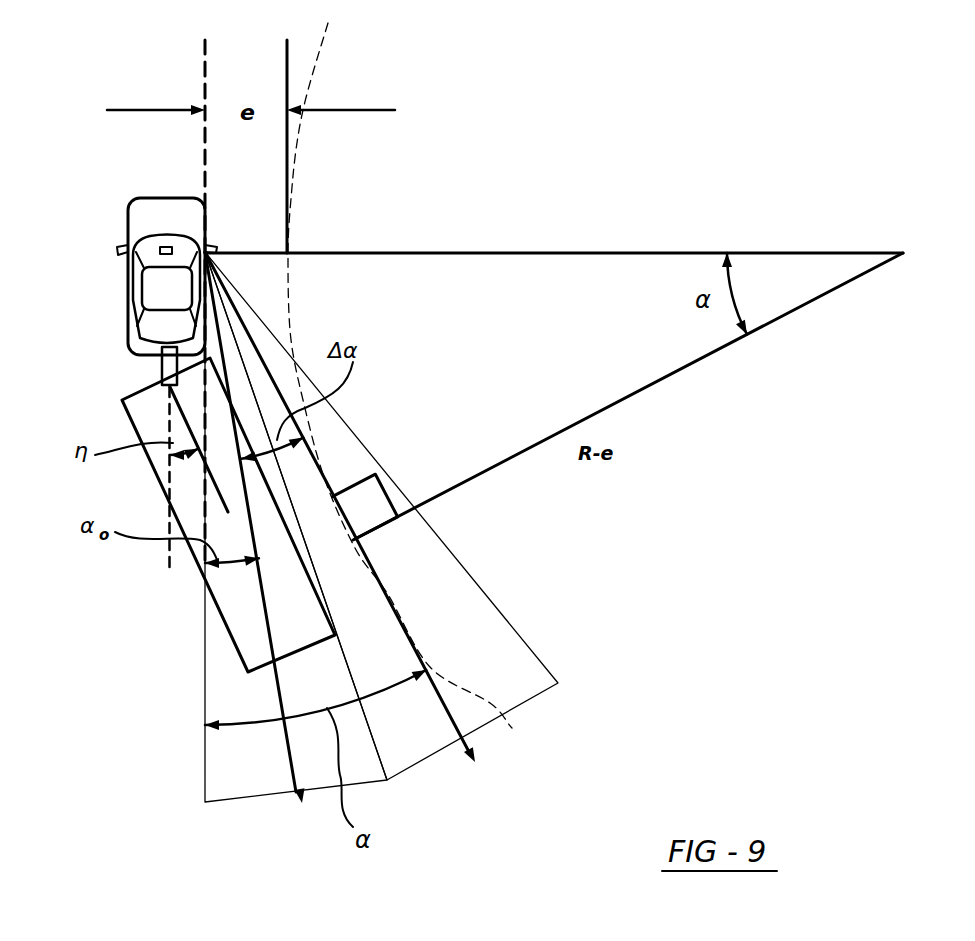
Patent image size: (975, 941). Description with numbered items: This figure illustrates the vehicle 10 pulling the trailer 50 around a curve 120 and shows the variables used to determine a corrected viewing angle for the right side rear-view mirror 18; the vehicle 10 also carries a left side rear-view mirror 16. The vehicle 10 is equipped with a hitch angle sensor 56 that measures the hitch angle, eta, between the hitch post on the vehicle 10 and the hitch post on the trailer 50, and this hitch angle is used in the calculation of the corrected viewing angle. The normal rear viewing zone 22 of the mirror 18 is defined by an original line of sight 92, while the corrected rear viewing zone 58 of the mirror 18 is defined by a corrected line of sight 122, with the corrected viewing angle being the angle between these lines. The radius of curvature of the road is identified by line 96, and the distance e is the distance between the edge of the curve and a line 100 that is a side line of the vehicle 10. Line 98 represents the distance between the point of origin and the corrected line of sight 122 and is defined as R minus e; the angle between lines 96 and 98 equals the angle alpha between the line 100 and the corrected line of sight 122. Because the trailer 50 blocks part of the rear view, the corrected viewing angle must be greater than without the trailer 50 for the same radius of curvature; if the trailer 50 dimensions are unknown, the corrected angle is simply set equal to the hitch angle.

The vehicle 10 is at (165, 197).
The left side rear-view mirror 16 is at (125, 248).
The right side rear-view mirror 18 is at (210, 250).
The normal rear viewing zone 22 is at (205, 700).
The trailer 50 is at (195, 553).
The hitch angle sensor 56 is at (162, 365).
The corrected rear viewing zone 58 is at (468, 572).
The original line of sight 92 is at (282, 688).
The radius of curvature line 96 is at (540, 250).
The R−e distance line 98 is at (653, 387).
The vehicle side line 100 is at (205, 75).
The curve 120 is at (295, 137).
The corrected line of sight 122 is at (442, 703).